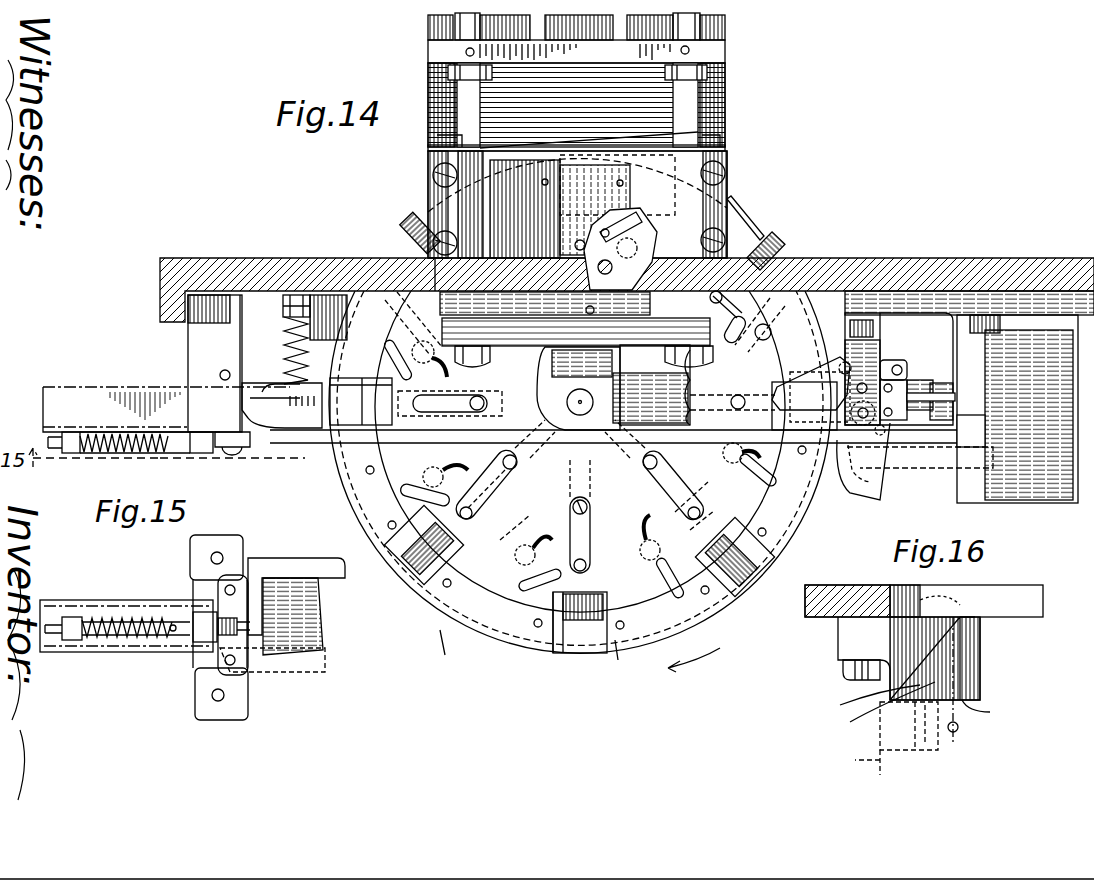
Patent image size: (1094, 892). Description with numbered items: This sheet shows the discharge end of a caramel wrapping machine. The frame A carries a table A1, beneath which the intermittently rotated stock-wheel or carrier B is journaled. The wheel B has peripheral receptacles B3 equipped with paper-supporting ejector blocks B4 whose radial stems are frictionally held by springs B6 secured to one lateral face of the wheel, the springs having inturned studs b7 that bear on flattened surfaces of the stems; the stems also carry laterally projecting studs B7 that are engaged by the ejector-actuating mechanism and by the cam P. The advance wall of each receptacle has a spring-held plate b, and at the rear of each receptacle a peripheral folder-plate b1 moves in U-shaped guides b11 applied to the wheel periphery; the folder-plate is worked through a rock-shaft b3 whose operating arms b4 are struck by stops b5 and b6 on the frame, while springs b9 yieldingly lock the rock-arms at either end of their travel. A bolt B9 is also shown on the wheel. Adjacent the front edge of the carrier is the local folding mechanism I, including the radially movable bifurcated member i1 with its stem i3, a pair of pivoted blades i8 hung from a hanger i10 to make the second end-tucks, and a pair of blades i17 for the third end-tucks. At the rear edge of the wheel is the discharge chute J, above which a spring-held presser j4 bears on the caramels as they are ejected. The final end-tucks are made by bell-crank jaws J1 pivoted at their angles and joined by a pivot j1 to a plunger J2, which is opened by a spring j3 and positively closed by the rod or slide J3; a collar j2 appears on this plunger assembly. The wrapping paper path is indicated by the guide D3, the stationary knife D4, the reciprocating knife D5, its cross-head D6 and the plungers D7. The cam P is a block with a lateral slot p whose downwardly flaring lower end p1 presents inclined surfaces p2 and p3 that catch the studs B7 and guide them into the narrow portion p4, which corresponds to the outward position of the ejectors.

In FIG. 14, the frame A is at (148, 318).
In FIG. 14, the table A1 is at (262, 258).
In FIG. 14, the cam P is at (335, 292).
In FIG. 16, the cam P is at (980, 668).
In FIG. 14, the guide D3 is at (725, 148).
In FIG. 14, the stationary knife D4 is at (727, 195).
In FIG. 14, the vertically reciprocating knife D5 is at (725, 90).
In FIG. 14, the cross-head D6 is at (725, 56).
In FIG. 14, the plungers D7 is at (690, 114).
In FIG. 14, the spring-held plate b is at (558, 655).
In FIG. 14, the peripheral folder-plate b1 is at (755, 232).
In FIG. 14, the rock-shaft b3 is at (380, 632).
In FIG. 14, the operating arms b4 is at (580, 468).
In FIG. 14, the stop b5 is at (600, 262).
In FIG. 14, the stop b6 is at (758, 340).
In FIG. 14, the inturned studs b7 is at (609, 505).
In FIG. 14, the springs b9 is at (698, 580).
In FIG. 14, the guides b11 is at (542, 664).
In FIG. 14, the rotary stock-wheel B is at (580, 427).
In FIG. 16, the rotary stock-wheel B is at (854, 765).
In FIG. 14, the peripheral receptacles B3 is at (770, 235).
In FIG. 16, the peripheral receptacles B3 is at (909, 726).
In FIG. 14, the ejector blocks B4 is at (440, 600).
In FIG. 14, the springs B6 is at (500, 500).
In FIG. 16, the laterally projecting studs B7 is at (958, 732).
In FIG. 14, the rim bolt B9 is at (405, 232).
In FIG. 14, the folding mechanism I is at (899, 413).
In FIG. 14, the bifurcated member i1 is at (905, 395).
In FIG. 14, the stem i3 is at (920, 396).
In FIG. 14, the blades i8 is at (811, 393).
In FIG. 14, the hanger i10 is at (880, 340).
In FIG. 14, the blades i17 is at (860, 470).
In FIG. 14, the discharge chute J is at (166, 409).
In FIG. 15, the discharge chute J is at (130, 655).
In FIG. 14, the jaws J1 is at (300, 430).
In FIG. 15, the jaws J1 is at (288, 585).
In FIG. 15, the plunger J2 is at (185, 645).
In FIG. 14, the slide J3 is at (358, 430).
In FIG. 15, the slide J3 is at (340, 573).
In FIG. 14, the pivot j1 is at (236, 455).
In FIG. 15, the pivot j1 is at (222, 635).
In FIG. 14, the collar j2 is at (200, 453).
In FIG. 14, the spring j3 is at (140, 453).
In FIG. 15, the spring j3 is at (120, 618).
In FIG. 14, the presser member j4 is at (268, 384).
In FIG. 16, the lateral slot p is at (935, 648).
In FIG. 16, the downwardly flaring lower end p1 is at (865, 706).
In FIG. 16, the inclined surface p2 is at (882, 714).
In FIG. 16, the inclined surface p3 is at (997, 712).
In FIG. 16, the narrow portion p4 is at (975, 617).